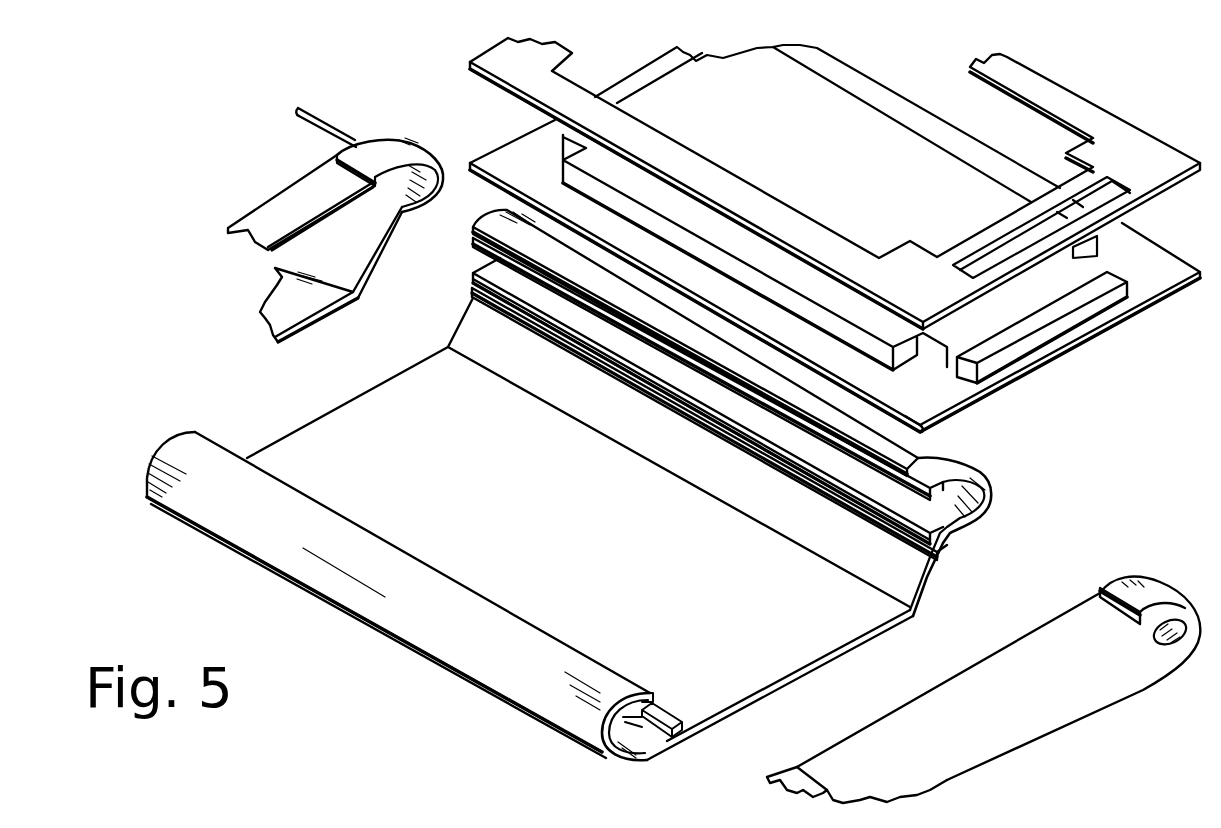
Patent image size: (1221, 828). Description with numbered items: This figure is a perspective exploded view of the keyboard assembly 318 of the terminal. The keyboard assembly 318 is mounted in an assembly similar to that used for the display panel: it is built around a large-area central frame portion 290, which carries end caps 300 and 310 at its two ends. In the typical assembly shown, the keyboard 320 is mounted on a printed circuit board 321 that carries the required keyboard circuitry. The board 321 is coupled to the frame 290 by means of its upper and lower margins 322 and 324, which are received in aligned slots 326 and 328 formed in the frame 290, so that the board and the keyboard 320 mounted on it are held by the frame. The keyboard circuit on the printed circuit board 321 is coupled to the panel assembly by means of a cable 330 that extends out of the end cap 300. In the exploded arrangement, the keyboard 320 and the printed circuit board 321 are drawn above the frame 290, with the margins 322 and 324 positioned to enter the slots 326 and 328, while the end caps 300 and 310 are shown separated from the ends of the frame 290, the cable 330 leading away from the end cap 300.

The central frame portion 290 is at (512, 516).
The end cap 300 is at (280, 196).
The end cap 310 is at (988, 747).
The keyboard assembly 318 is at (303, 76).
The keyboard 320 is at (794, 272).
The printed circuit board 321 is at (518, 137).
The upper margin 322 is at (1140, 226).
The lower margin 324 is at (923, 432).
The slot 326 is at (908, 468).
The slot 328 is at (655, 700).
The cable 330 is at (330, 110).